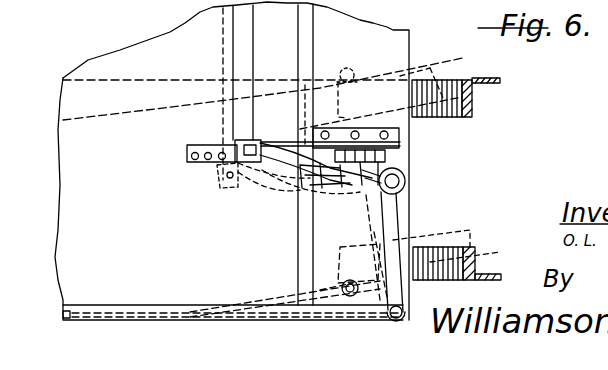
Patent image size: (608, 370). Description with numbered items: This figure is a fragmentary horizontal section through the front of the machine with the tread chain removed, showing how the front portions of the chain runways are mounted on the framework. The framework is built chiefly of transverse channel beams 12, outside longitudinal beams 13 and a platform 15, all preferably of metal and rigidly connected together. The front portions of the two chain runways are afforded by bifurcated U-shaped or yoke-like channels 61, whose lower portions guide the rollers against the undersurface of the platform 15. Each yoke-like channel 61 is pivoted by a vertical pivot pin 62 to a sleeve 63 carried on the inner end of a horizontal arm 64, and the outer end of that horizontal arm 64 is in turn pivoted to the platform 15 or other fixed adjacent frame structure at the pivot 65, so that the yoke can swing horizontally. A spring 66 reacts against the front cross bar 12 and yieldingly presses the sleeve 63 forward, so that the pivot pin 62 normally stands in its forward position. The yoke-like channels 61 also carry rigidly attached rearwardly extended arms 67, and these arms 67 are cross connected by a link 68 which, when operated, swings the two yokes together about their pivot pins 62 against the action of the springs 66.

The transverse channel beam 12 is at (300, 254).
The longitudinal beam 13 is at (138, 305).
The platform 15 is at (66, 255).
The yoke-like channel 61 is at (474, 106).
The vertical pivot pin 62 is at (402, 166).
The sleeve 63 is at (407, 181).
The horizontal arm 64 is at (399, 222).
The pivot 65 is at (388, 321).
The spring 66 is at (321, 193).
The rearwardly extended arm 67 is at (277, 150).
The link 68 is at (249, 32).